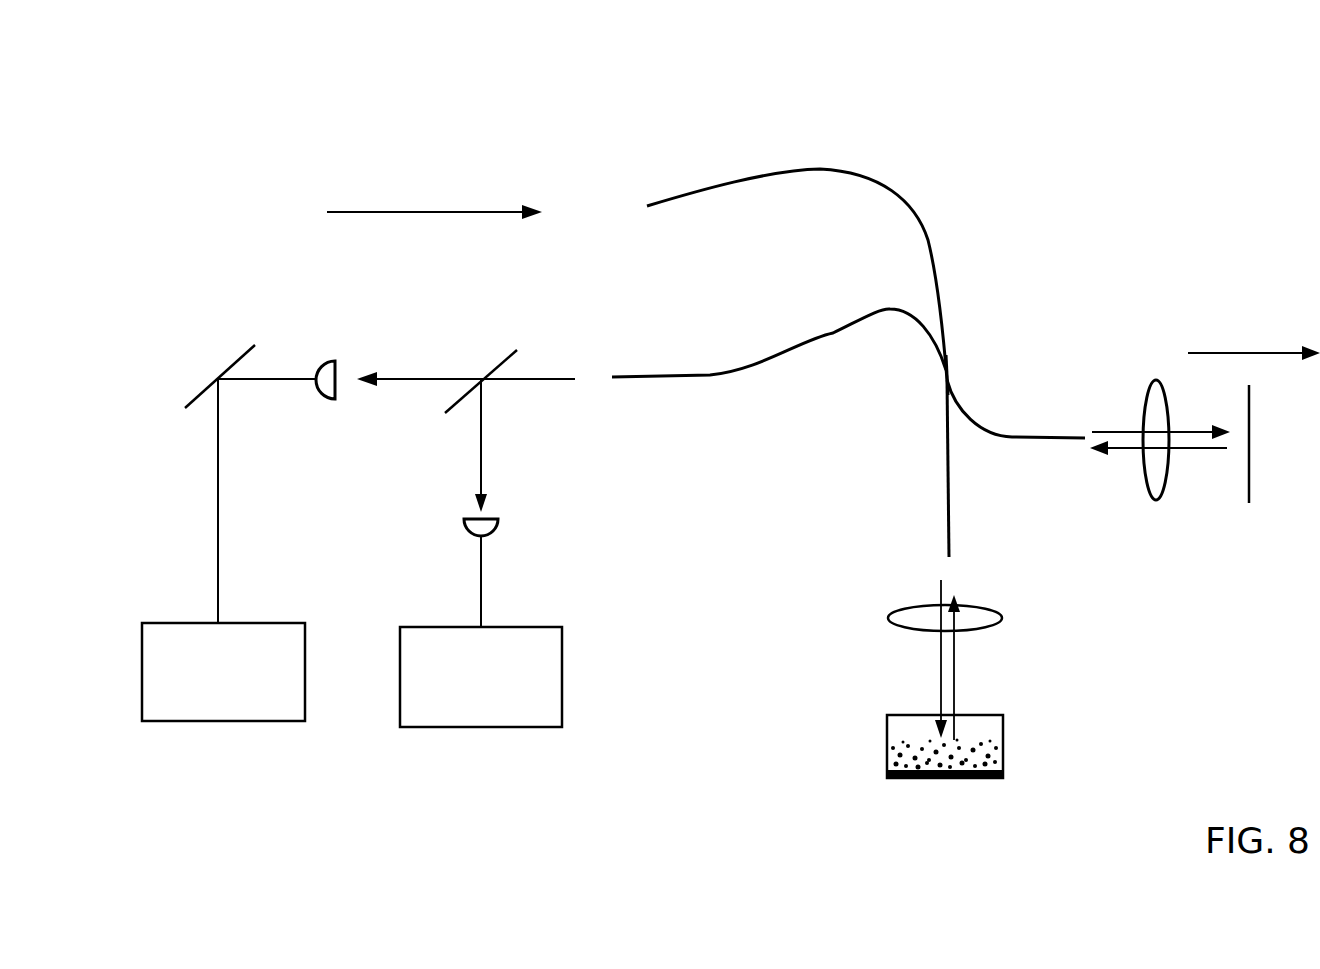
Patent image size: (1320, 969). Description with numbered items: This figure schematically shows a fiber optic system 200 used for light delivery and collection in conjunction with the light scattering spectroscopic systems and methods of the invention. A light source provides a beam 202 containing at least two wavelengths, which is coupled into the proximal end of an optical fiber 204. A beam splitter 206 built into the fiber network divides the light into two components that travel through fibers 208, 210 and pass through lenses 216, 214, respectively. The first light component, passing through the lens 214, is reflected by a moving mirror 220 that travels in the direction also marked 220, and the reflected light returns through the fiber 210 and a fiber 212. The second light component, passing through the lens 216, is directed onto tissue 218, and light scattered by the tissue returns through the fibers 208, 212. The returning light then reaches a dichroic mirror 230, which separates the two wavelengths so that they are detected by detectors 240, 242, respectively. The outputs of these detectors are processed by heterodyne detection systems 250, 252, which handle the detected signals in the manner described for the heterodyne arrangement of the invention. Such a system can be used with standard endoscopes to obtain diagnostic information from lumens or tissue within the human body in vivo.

The fiber optic system 200 is at (986, 148).
The beam 202 is at (422, 208).
The optical fiber 204 is at (783, 170).
The beam splitter 206 is at (924, 357).
The fiber 208 is at (952, 497).
The fiber 210 is at (1013, 436).
The fiber 212 is at (700, 372).
The lens 214 is at (1157, 500).
The lens 216 is at (993, 628).
The tissue 218 is at (1004, 750).
The moving mirror 220 is at (1246, 350).
The dichroic mirror 230 is at (496, 365).
The detector 240 is at (497, 525).
The detector 242 is at (333, 360).
The heterodyne detection system 250 is at (481, 677).
The heterodyne detection system 252 is at (229, 533).